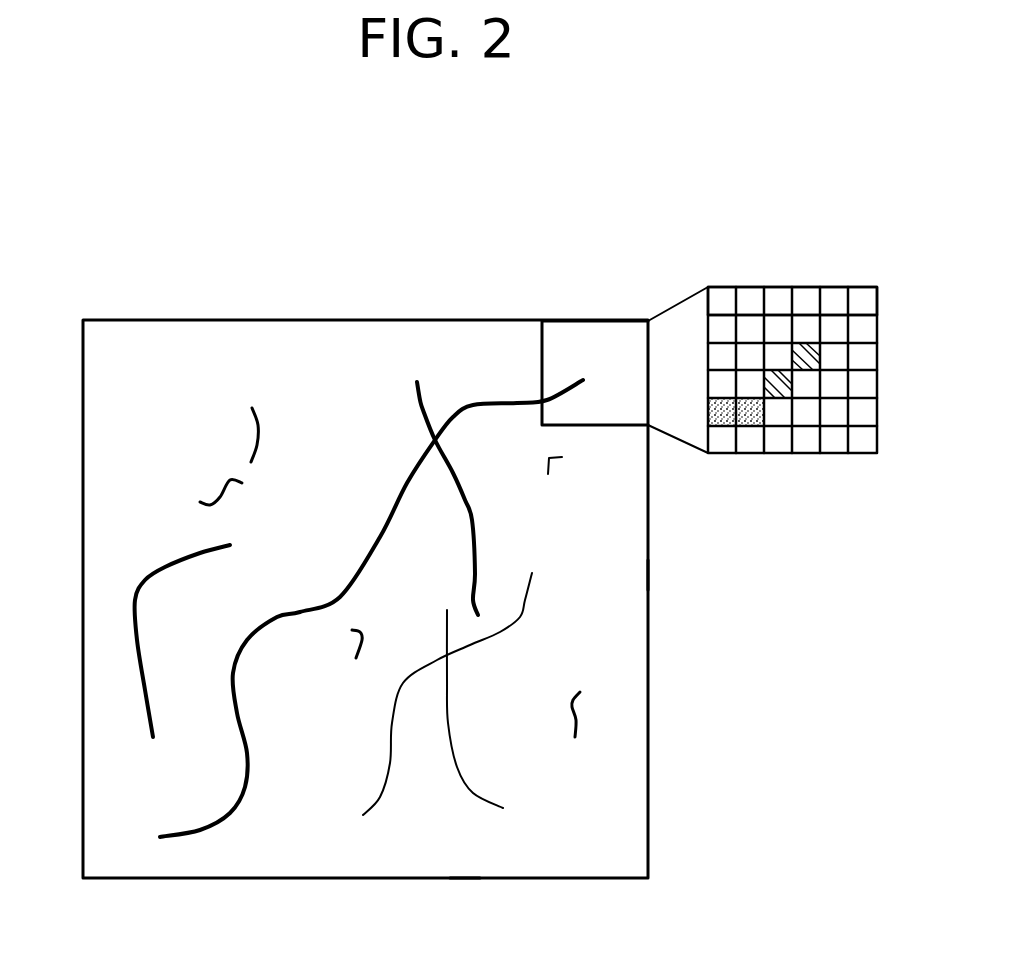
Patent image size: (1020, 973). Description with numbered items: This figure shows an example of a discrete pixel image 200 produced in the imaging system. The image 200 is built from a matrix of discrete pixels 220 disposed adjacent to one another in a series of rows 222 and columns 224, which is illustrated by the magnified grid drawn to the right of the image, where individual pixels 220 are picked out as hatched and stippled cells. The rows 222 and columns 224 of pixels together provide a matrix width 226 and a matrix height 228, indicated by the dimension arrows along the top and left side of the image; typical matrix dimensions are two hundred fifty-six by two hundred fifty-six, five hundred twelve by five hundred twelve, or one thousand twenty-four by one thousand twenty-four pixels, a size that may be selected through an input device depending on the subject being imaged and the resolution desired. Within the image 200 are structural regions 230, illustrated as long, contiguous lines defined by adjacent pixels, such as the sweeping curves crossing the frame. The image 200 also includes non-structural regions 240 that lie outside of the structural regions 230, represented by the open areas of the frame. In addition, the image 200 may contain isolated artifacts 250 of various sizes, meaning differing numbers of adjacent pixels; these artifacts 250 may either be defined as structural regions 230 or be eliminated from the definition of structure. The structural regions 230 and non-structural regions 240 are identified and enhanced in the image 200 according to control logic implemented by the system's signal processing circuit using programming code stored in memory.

The discrete pixel image 200 is at (181, 197).
The discrete pixels 220 is at (806, 420).
The rows 222 is at (708, 353).
The columns 224 is at (777, 287).
The matrix width 226 is at (648, 303).
The matrix height 228 is at (70, 878).
The structural regions 230 is at (368, 812).
The non-structural regions 240 is at (628, 570).
The isolated artifacts 250 is at (222, 490).